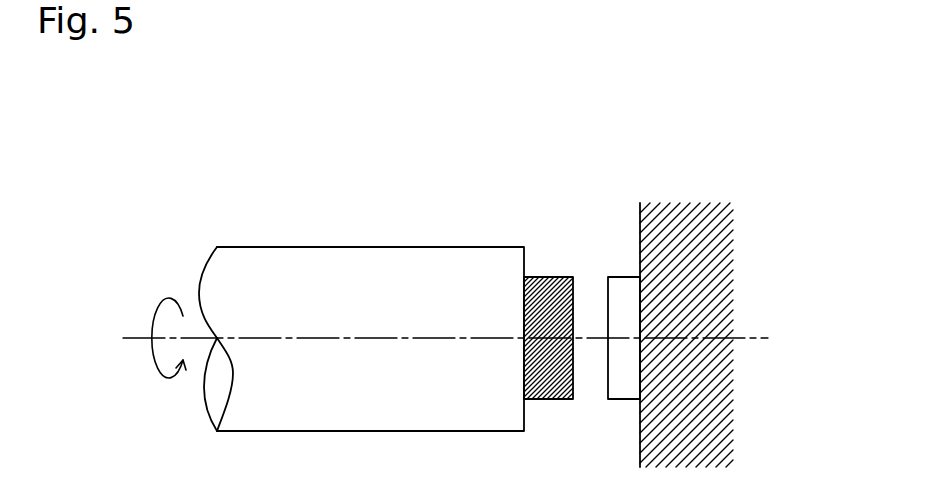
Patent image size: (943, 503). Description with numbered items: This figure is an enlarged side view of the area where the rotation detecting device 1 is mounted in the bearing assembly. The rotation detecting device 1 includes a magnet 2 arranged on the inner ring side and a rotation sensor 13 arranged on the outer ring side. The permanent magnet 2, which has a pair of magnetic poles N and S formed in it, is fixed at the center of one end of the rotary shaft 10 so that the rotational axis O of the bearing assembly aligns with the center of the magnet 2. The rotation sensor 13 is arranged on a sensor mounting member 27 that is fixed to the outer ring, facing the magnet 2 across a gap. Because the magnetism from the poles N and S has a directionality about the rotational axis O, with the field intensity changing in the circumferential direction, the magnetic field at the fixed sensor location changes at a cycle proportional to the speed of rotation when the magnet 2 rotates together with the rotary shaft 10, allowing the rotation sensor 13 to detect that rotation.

The rotational axis O is at (138, 338).
The rotary shaft 10 is at (342, 247).
The rotation detecting device 1 is at (603, 125).
The magnet 2 is at (537, 277).
The rotation sensor 13 is at (624, 283).
The sensor mounting member 27 is at (686, 203).